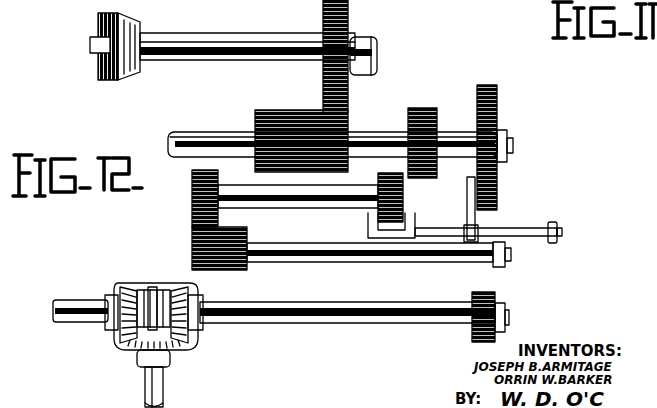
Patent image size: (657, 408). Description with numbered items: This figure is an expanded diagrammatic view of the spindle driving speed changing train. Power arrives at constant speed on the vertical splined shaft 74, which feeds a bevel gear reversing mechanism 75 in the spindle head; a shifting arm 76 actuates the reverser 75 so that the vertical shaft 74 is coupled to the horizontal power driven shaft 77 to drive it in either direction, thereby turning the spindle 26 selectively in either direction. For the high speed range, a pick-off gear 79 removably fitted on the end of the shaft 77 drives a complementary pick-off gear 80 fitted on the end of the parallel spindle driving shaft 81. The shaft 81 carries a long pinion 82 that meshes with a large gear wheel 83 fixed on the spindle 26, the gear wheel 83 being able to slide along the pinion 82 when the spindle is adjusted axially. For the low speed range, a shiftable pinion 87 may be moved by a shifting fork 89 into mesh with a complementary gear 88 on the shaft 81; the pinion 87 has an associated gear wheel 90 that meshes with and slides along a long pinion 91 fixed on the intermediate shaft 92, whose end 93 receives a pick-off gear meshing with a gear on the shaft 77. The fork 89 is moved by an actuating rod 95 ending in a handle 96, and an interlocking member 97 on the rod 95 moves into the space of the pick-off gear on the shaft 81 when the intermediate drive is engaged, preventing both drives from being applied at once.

The spindle 26 is at (181, 37).
The large gear wheel 83 is at (348, 14).
The long pinion 82 is at (287, 98).
The spindle driving shaft 81 is at (383, 135).
The complementary gear 88 is at (430, 107).
The complementary pick-off gear 80 is at (497, 102).
The gear wheel 90 is at (192, 203).
The long pinion 91 is at (193, 252).
The shiftable pinion 87 is at (368, 205).
The shifting fork 89 is at (423, 208).
The actuating rod 95 is at (511, 226).
The interlocking member 97 is at (467, 213).
The actuating handle 96 is at (556, 221).
The intermediate shaft 92 is at (332, 259).
The end of intermediate shaft 93 is at (482, 265).
The horizontal power driven shaft 77 is at (353, 319).
The pick-off gear 79 is at (495, 292).
The bevel gear reversing mechanism 75 is at (116, 357).
The shifting arm 76 is at (150, 290).
The vertical splined shaft 74 is at (163, 388).